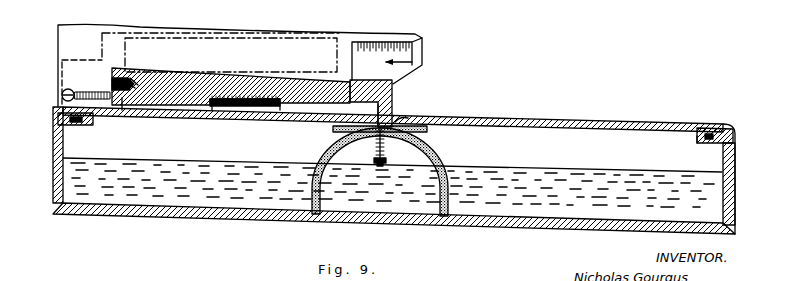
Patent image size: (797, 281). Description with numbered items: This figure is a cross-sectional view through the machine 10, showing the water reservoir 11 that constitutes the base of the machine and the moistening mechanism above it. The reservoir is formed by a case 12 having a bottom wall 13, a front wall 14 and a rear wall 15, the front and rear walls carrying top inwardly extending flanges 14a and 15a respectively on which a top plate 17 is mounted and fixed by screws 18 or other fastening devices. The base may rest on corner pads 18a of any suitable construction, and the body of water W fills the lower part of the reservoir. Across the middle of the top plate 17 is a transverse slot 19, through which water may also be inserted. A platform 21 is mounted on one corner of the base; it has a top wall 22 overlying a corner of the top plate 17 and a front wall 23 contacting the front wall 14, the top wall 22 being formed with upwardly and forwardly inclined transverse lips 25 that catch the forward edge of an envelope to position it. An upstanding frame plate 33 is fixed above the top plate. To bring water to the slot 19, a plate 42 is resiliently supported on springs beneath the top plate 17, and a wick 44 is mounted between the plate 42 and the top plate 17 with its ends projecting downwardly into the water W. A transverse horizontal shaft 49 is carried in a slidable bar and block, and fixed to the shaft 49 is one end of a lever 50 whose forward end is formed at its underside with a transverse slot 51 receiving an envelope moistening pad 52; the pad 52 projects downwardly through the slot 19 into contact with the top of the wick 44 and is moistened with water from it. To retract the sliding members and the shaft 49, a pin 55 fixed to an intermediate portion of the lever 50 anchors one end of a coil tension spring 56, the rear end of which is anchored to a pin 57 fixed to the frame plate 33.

The machine 10 is at (395, 83).
The water reservoir 11 is at (125, 45).
The case 12 is at (600, 232).
The bottom wall 13 is at (525, 226).
The front wall 14 is at (738, 179).
The flange 14a is at (700, 141).
The rear wall 15 is at (53, 158).
The flange 15a is at (81, 132).
The top plate 17 is at (551, 128).
The screws 18 is at (717, 128).
The corner pads 18a is at (564, 8).
The transverse slot 19 is at (394, 119).
The platform 21 is at (504, 110).
The top wall 22 is at (566, 121).
The front wall 23 is at (745, 143).
The lips 25 is at (420, 117).
The frame plate 33 is at (66, 42).
The plate 42 is at (372, 138).
The wick 44 is at (447, 160).
The shaft 49 is at (120, 80).
The lever 50 is at (215, 70).
The transverse slot 51 is at (393, 97).
The envelope moistening pad 52 is at (384, 96).
The pin 55 is at (273, 110).
The coil tension spring 56 is at (240, 112).
The pin 57 is at (62, 94).
The liquid W is at (598, 170).